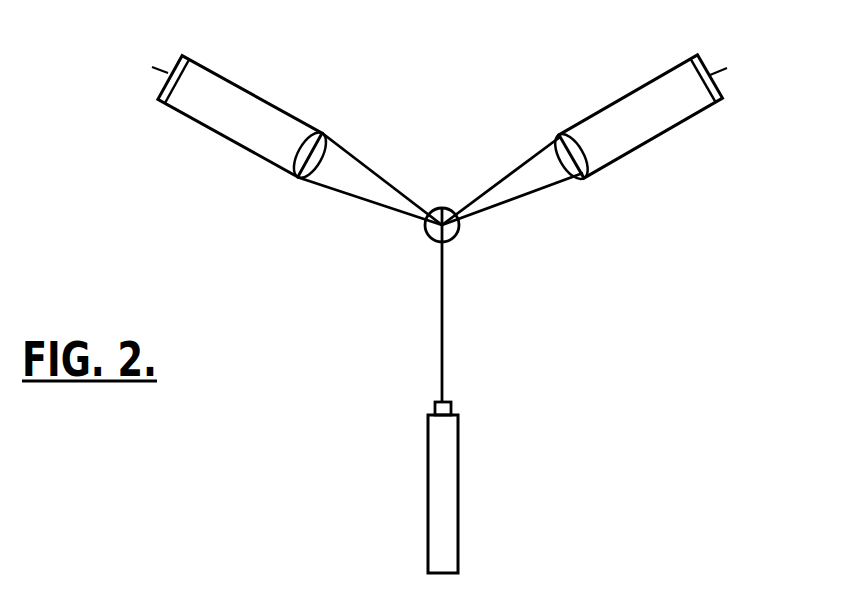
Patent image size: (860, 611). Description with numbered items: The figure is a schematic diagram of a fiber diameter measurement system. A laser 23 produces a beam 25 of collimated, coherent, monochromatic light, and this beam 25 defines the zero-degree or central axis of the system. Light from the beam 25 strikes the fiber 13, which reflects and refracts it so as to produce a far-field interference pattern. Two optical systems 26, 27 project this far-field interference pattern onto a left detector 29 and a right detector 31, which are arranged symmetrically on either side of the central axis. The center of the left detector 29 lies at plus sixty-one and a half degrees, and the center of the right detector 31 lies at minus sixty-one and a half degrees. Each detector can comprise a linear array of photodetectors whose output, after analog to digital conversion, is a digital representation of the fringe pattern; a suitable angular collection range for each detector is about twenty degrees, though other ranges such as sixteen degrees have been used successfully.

The fiber 13 is at (442, 223).
The laser 23 is at (450, 468).
The beam 25 is at (442, 335).
The optical system 26 is at (306, 155).
The optical system 27 is at (577, 163).
The left detector 29 is at (183, 55).
The right detector 31 is at (722, 95).